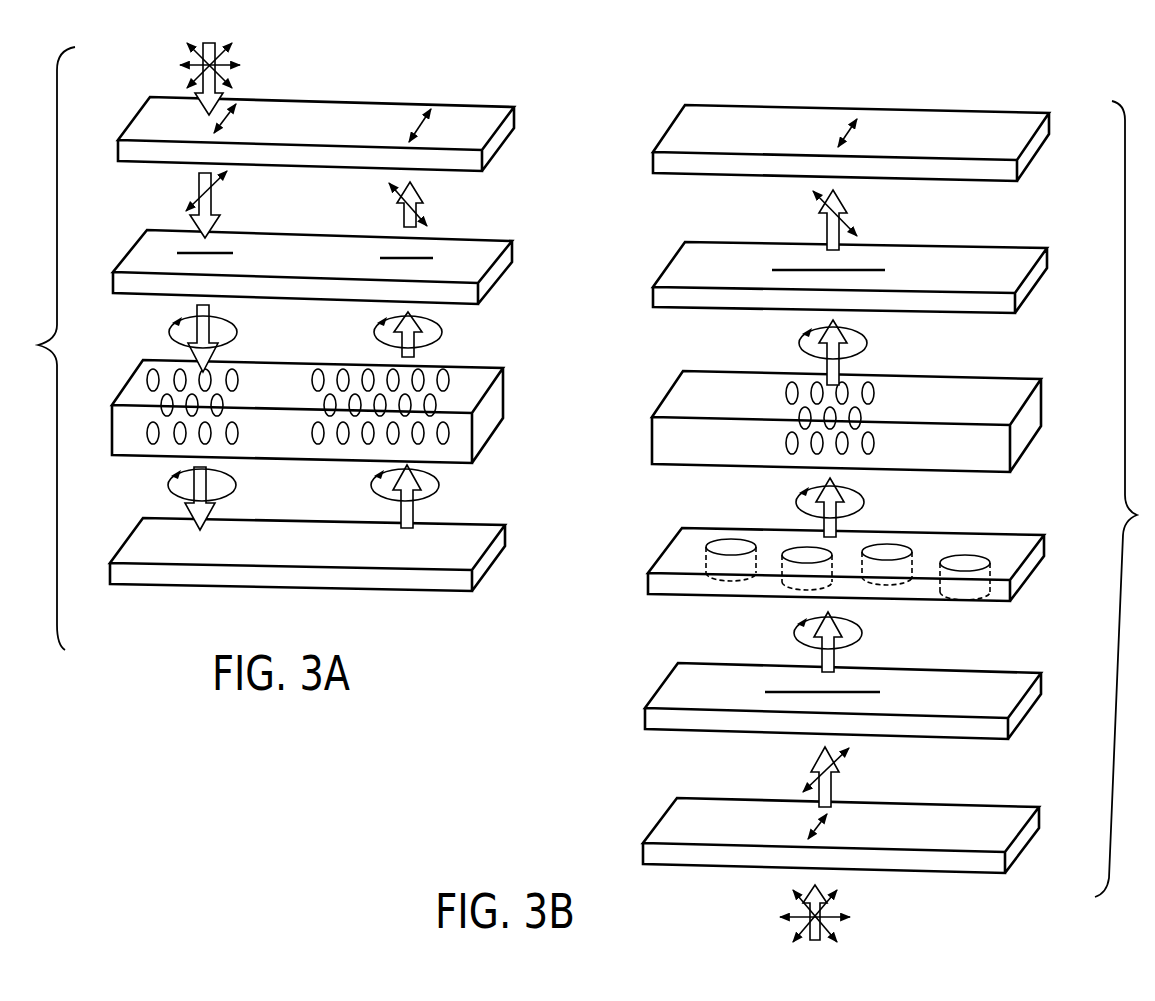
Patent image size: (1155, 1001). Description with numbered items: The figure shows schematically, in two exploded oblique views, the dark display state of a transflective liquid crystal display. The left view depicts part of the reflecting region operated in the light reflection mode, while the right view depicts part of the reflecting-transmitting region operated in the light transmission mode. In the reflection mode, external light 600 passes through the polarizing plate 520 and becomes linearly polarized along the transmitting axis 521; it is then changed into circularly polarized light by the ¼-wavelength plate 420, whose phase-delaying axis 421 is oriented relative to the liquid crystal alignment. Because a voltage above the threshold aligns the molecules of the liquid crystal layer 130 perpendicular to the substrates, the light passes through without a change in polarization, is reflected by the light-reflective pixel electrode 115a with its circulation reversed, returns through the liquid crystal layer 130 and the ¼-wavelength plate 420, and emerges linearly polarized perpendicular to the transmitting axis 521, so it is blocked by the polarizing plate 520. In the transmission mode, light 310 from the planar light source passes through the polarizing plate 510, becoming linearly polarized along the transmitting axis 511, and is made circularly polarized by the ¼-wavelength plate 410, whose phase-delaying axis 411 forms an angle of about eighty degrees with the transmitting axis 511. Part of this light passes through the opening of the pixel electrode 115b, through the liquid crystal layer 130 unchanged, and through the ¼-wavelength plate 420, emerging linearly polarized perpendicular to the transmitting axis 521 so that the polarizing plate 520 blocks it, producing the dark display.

In FIG. 3A, the external light 600 is at (243, 55).
In FIG. 3A, the transmitting axis 521 is at (422, 129).
In FIG. 3A, the polarizing plate 520 is at (487, 129).
In FIG. 3B, the polarizing plate 520 is at (688, 138).
In FIG. 3A, the phase-delaying axis 421 is at (426, 257).
In FIG. 3A, the ¼-wavelength plate 420 is at (484, 264).
In FIG. 3B, the ¼-wavelength plate 420 is at (688, 273).
In FIG. 3A, the liquid crystal layer 130 is at (504, 398).
In FIG. 3B, the liquid crystal layer 130 is at (685, 403).
In FIG. 3A, the pixel electrode 115a is at (478, 552).
In FIG. 3B, the pixel electrode 115b is at (683, 553).
In FIG. 3B, the ¼-wavelength plate 410 is at (682, 690).
In FIG. 3B, the phase-delaying axis 411 is at (871, 690).
In FIG. 3B, the polarizing plate 510 is at (680, 823).
In FIG. 3B, the transmitting axis 511 is at (816, 832).
In FIG. 3B, the light 310 is at (788, 907).